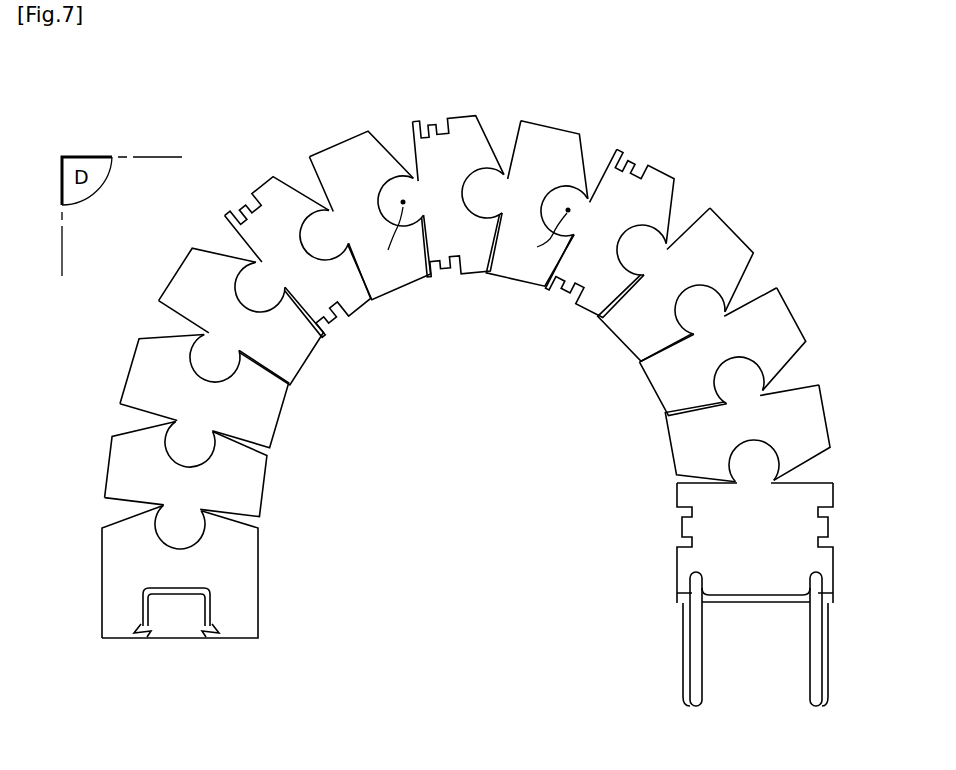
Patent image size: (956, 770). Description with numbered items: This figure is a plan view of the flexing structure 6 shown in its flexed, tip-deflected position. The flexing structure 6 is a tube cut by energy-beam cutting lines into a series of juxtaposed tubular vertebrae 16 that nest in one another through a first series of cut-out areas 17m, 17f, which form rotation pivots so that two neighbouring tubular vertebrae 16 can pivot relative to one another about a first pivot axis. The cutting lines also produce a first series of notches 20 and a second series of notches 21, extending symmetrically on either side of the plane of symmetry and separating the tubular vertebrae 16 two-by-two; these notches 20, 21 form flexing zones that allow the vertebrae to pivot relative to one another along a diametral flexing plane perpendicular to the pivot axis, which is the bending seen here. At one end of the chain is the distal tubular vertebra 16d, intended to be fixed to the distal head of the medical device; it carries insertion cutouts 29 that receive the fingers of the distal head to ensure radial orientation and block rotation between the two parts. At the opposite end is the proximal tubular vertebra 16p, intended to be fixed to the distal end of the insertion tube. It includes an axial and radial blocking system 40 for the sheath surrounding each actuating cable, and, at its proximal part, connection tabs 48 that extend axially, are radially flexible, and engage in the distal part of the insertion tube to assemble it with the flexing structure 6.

The flexing structure 6 is at (692, 156).
The tubular vertebrae 16 is at (545, 145).
The distal tubular vertebra 16d is at (119, 589).
The proximal tubular vertebra 16p is at (793, 555).
The cut-out area of the first series 17f is at (703, 304).
The cut-out area of the first series 17m is at (704, 305).
The notches of the first series 20 is at (304, 176).
The notches of the second series 21 is at (282, 451).
The insertion cutouts 29 is at (175, 604).
The axial and radial blocking system 40 is at (654, 568).
The connection tabs 48 is at (826, 690).